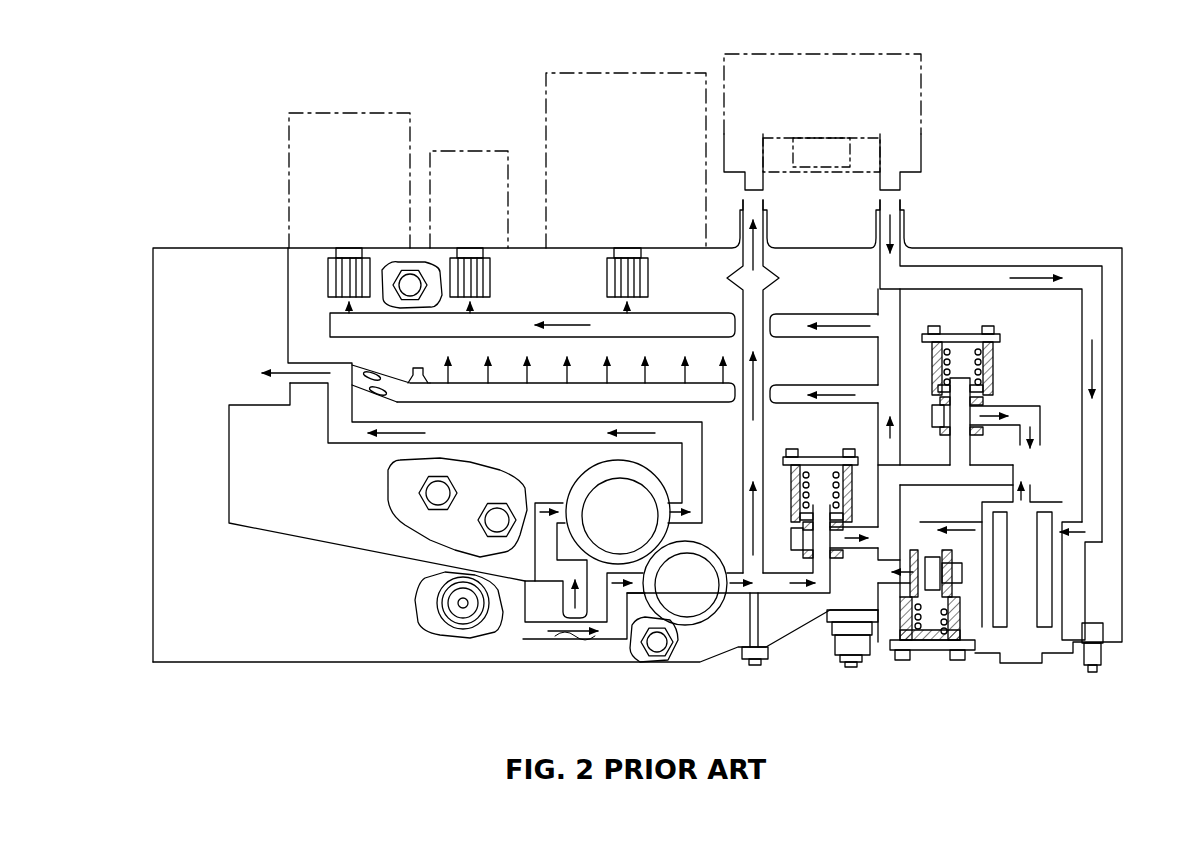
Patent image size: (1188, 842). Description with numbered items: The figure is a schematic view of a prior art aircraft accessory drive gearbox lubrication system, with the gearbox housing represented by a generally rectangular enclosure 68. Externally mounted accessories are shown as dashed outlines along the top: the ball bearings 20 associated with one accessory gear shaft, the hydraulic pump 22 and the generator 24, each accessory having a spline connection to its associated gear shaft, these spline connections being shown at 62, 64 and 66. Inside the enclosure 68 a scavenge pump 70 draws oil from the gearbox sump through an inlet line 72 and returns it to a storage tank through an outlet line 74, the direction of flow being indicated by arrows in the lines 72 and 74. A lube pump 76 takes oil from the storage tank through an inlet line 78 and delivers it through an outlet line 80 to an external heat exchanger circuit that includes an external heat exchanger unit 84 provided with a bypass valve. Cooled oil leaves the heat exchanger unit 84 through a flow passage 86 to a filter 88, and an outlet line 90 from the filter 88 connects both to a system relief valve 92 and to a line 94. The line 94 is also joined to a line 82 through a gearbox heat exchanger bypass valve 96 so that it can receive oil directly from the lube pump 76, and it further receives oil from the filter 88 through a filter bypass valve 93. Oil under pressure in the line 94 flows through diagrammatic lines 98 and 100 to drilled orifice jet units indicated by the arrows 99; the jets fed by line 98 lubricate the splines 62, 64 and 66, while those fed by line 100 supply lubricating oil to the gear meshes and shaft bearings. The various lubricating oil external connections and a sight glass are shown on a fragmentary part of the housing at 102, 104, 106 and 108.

The pair of ball bearings 20 is at (296, 150).
The hydraulic pump 22 is at (456, 160).
The generator 24 is at (596, 94).
The spline connection 62 is at (330, 275).
The spline connection 64 is at (490, 275).
The spline connection 66 is at (648, 278).
The enclosure 68 is at (228, 662).
The scavenge pump 70 is at (585, 482).
The inlet line 72 is at (525, 583).
The outlet line 74 is at (697, 463).
The lube pump 76 is at (700, 608).
The inlet line 78 is at (523, 640).
The outlet line 80 is at (753, 440).
The line 82 is at (792, 598).
The external heat exchanger unit 84 is at (912, 108).
The flow passage 86 is at (1097, 352).
The filter 88 is at (1043, 620).
The outlet line 90 is at (1020, 480).
The system relief valve 92 is at (993, 372).
The filter bypass valve 93 is at (892, 630).
The line 94 is at (890, 330).
The gearbox heat exchanger bypass valve 96 is at (832, 572).
The diagrammatic line 98 is at (527, 322).
The orifice jet units 99 is at (490, 372).
The diagrammatic line 100 is at (412, 392).
The lubricating oil external connection 102 is at (430, 496).
The lubricating oil external connection 104 is at (490, 526).
The lubricating oil external connection 106 is at (460, 608).
The sight glass 108 is at (657, 648).